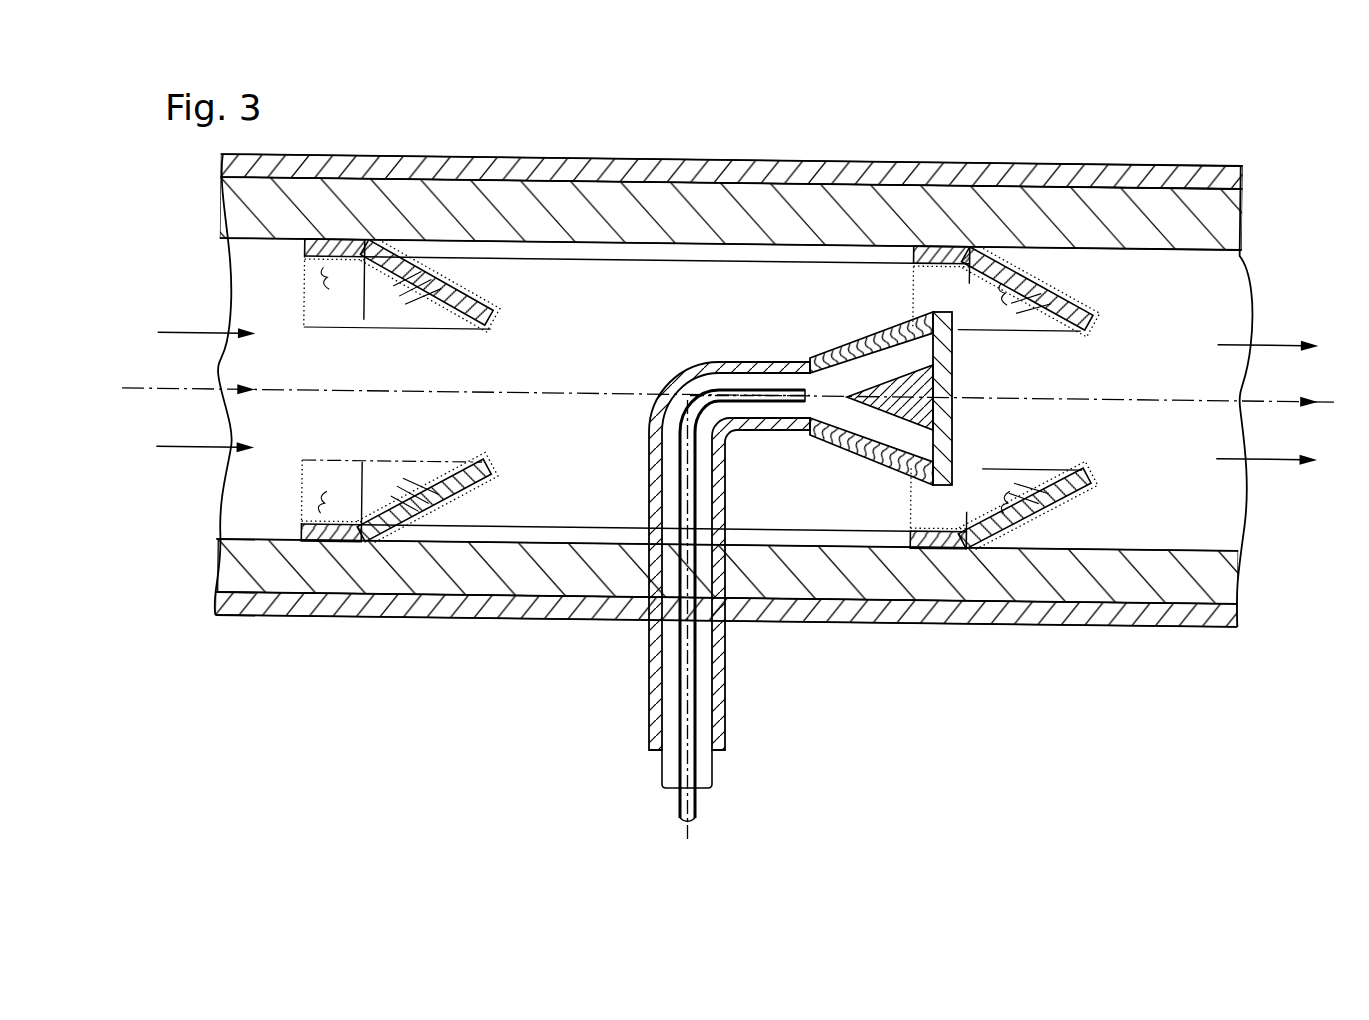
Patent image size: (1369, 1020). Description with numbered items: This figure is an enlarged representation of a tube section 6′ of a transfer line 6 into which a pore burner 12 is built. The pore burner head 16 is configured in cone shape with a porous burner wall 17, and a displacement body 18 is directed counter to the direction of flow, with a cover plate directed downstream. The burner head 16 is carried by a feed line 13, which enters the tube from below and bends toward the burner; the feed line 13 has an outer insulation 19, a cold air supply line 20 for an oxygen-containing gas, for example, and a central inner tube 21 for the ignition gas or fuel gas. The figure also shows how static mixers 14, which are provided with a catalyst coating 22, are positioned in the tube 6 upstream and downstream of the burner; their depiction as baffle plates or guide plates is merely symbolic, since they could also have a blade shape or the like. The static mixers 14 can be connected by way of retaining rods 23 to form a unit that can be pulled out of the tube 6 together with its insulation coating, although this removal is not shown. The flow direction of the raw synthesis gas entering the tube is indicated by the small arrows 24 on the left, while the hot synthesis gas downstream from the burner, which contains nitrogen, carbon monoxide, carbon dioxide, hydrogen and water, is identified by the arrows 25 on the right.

The transfer line 6 is at (808, 120).
The tube section 6′ is at (668, 165).
The pore burner 12 is at (852, 507).
The feed line 13 is at (623, 710).
The static mixer 14 is at (337, 287).
The pore burner head 16 is at (863, 370).
The porous burner wall 17 is at (892, 322).
The displacement body 18 is at (982, 305).
The outer insulation 19 is at (648, 650).
The cold air supply line 20 is at (662, 772).
The central inner tube 21 is at (697, 805).
The catalyst coating 22 is at (427, 270).
The retaining rods 23 is at (460, 532).
The arrows indicating flow direction of raw synthesis gas 24 is at (172, 333).
The arrows identifying hot synthesis gas 25 is at (1260, 397).